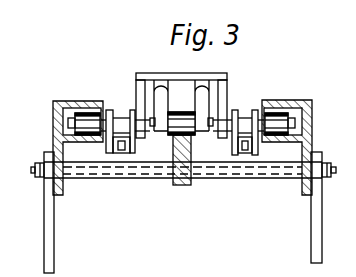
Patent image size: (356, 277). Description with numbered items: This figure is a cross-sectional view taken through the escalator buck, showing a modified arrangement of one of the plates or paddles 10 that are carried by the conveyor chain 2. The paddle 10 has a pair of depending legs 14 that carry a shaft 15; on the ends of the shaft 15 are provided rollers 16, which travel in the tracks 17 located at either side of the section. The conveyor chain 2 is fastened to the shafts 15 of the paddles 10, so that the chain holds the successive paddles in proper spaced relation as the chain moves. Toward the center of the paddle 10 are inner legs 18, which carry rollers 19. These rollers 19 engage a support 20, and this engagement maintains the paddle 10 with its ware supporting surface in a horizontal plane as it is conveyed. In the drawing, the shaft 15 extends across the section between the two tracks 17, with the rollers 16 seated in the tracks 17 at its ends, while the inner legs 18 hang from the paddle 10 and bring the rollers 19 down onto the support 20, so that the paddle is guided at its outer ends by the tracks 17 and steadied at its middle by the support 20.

The conveyor chain 2 is at (233, 148).
The paddle 10 is at (189, 127).
The depending leg 14 is at (231, 95).
The shaft 15 is at (120, 110).
The roller 16 is at (83, 117).
The track 17 is at (86, 142).
The inner leg 18 is at (172, 132).
The roller 19 is at (180, 111).
The support 20 is at (176, 185).